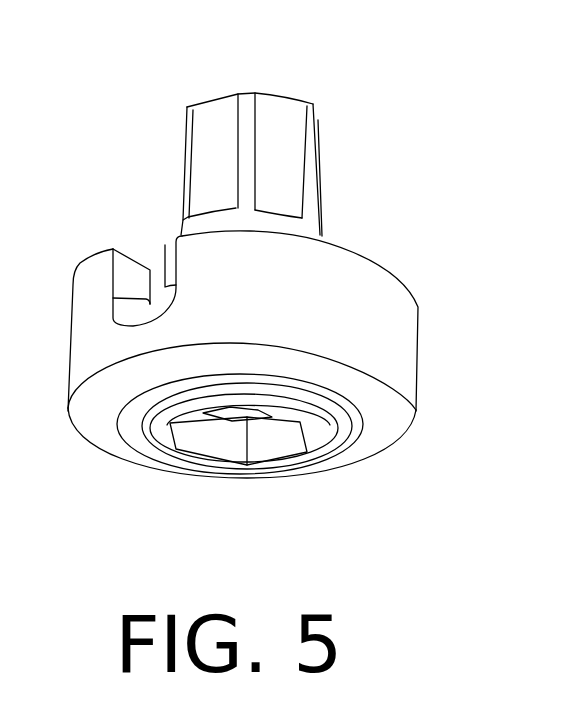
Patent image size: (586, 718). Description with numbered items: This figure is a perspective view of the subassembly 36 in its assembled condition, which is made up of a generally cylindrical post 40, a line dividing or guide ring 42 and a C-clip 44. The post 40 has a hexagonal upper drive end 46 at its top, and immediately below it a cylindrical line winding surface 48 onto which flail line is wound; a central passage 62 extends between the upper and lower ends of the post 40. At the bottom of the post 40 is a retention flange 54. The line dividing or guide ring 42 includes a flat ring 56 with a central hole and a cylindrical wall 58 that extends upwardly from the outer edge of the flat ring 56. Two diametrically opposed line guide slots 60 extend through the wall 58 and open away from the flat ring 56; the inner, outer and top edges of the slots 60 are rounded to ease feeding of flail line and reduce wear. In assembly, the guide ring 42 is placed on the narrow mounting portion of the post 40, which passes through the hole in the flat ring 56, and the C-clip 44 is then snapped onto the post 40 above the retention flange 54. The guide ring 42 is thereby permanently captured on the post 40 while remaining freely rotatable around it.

The subassembly 36 is at (408, 189).
The post 40 is at (250, 92).
The line dividing or guide ring 42 is at (418, 348).
The C-clip 44 is at (312, 453).
The hexagonal upper drive end 46 is at (322, 147).
The cylindrical line winding surface 48 is at (217, 220).
The retention flange 54 is at (148, 462).
The flat ring 56 is at (98, 393).
The cylindrical wall 58 is at (388, 297).
The line guide slots 60 is at (158, 258).
The central passage 62 is at (273, 447).